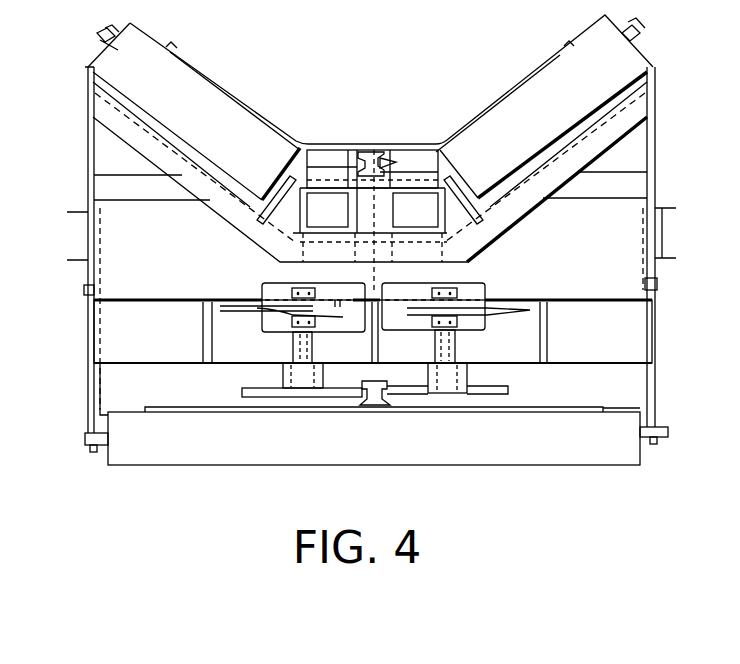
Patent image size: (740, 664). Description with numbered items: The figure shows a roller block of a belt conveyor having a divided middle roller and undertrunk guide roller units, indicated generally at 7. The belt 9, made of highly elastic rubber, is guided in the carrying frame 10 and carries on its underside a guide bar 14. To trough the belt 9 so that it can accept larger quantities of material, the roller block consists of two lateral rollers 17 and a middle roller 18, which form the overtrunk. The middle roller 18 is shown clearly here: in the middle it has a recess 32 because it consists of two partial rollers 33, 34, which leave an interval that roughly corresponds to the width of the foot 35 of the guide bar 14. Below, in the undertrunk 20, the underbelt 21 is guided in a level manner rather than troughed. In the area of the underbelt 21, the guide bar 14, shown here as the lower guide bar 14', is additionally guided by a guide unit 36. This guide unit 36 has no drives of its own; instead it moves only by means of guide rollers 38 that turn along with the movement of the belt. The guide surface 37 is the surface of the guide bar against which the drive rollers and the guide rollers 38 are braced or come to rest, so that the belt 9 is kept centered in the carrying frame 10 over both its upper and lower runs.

The conveyor belt tensioning assembly 7 is at (76, 353).
The belt 9 is at (246, 107).
The carrying frame 10 is at (90, 115).
The guide bar 14 is at (395, 208).
The lower mounting member 14' is at (382, 416).
The lateral rollers 17 is at (607, 67).
The middle roller 18 is at (460, 194).
The undertrunk 20 is at (610, 383).
The underbelt 21 is at (574, 410).
The recess 32 is at (391, 162).
The partial roller 33 is at (330, 160).
The partial roller 34 is at (425, 152).
The foot 35 is at (361, 154).
The guide unit 36 is at (281, 368).
The guide surface 37 is at (292, 168).
The guide rollers 38 is at (258, 392).